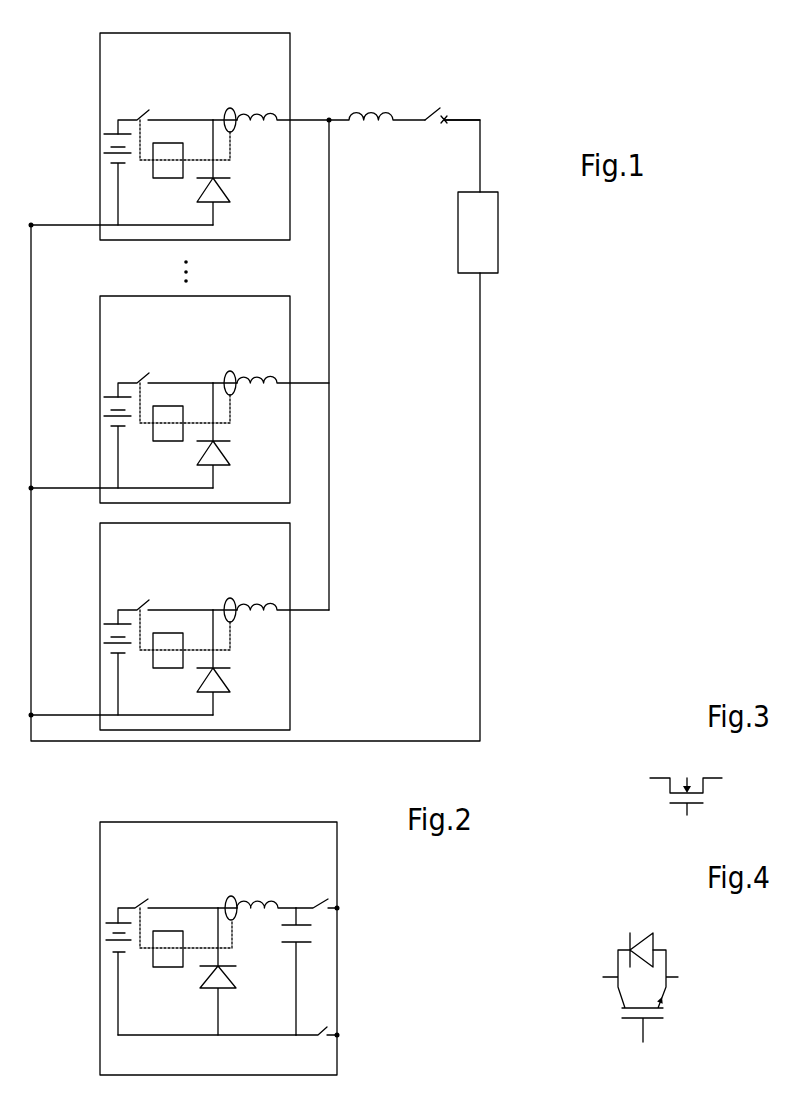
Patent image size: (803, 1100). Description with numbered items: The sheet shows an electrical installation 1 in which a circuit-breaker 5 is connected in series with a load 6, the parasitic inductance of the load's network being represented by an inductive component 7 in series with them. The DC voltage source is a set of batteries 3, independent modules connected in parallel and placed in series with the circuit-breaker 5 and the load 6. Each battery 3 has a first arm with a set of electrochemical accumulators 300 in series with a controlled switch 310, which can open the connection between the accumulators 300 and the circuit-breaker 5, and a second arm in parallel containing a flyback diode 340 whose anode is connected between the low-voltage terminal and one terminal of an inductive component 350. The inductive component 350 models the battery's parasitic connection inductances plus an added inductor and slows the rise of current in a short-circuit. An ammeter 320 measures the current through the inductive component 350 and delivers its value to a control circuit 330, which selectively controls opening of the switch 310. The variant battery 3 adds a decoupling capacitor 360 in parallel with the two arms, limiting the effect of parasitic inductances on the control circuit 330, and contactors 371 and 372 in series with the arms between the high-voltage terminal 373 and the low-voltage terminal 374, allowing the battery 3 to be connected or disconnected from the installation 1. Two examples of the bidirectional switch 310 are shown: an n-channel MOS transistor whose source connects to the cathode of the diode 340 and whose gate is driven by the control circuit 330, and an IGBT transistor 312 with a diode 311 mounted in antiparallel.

In FIG. 1, the electrical installation 1 is at (502, 104).
In FIG. 1, the battery 3 is at (100, 137).
In FIG. 2, the battery 3 is at (98, 950).
In FIG. 1, the circuit-breaker 5 is at (432, 105).
In FIG. 1, the load 6 is at (471, 244).
In FIG. 1, the inductive component 7 is at (372, 112).
In FIG. 1, the set of electrochemical accumulators 300 is at (103, 150).
In FIG. 2, the set of electrochemical accumulators 300 is at (103, 935).
In FIG. 1, the controlled switch 310 is at (137, 116).
In FIG. 2, the controlled switch 310 is at (137, 904).
In FIG. 3, the controlled switch 310 is at (687, 784).
In FIG. 4, the controlled switch 310 is at (664, 985).
In FIG. 4, the diode 311 is at (641, 937).
In FIG. 4, the IGBT transistor 312 is at (660, 1025).
In FIG. 1, the ammeter 320 is at (228, 108).
In FIG. 2, the ammeter 320 is at (229, 896).
In FIG. 1, the control circuit 330 is at (165, 143).
In FIG. 2, the control circuit 330 is at (165, 931).
In FIG. 1, the flyback diode 340 is at (232, 190).
In FIG. 2, the flyback diode 340 is at (238, 977).
In FIG. 1, the inductive component 350 is at (258, 108).
In FIG. 2, the inductive component 350 is at (258, 906).
In FIG. 2, the decoupling capacitor 360 is at (315, 936).
In FIG. 2, the contactor 371 is at (320, 900).
In FIG. 2, the contactor 372 is at (325, 1030).
In FIG. 2, the high-voltage terminal 373 is at (339, 906).
In FIG. 2, the low-voltage terminal 374 is at (340, 1035).